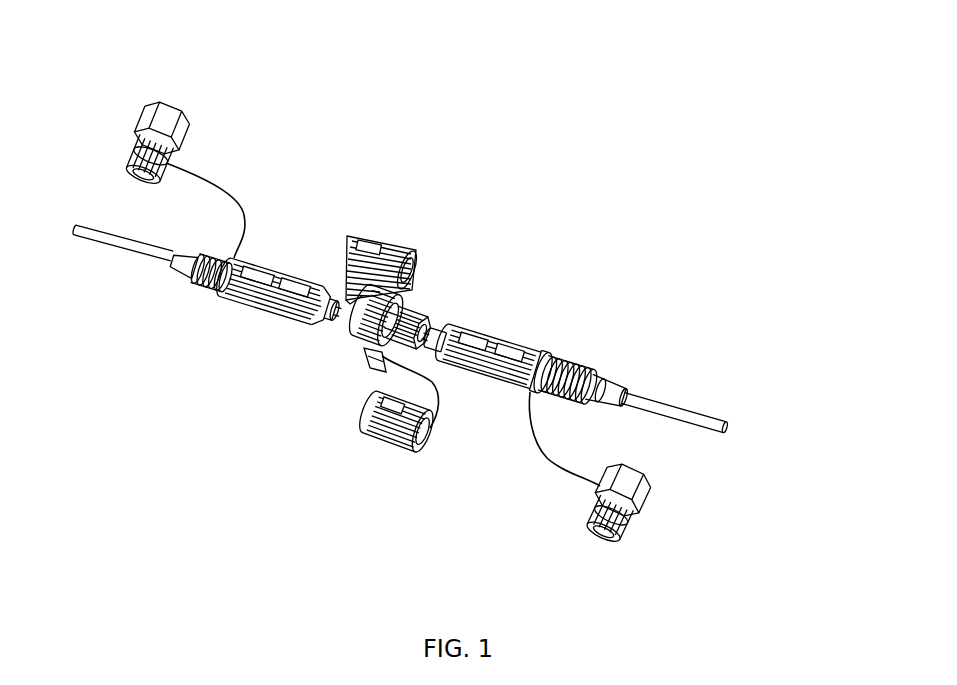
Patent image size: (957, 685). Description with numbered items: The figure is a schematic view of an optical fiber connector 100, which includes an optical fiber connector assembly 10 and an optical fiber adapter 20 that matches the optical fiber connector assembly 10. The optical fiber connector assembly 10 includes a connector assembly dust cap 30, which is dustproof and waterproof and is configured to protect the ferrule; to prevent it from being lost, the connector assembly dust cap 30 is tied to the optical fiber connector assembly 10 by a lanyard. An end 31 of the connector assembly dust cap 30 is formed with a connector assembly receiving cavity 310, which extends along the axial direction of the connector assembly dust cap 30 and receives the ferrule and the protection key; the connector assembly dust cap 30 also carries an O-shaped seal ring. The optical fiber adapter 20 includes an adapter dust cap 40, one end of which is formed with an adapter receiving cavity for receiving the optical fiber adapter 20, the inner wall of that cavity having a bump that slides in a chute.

The optical fiber connector 100 is at (456, 338).
The optical fiber connector assembly 10 is at (577, 284).
The optical fiber adapter 20 is at (460, 317).
The connector assembly dust cap 30 is at (693, 558).
The end 31 is at (618, 523).
The connector assembly receiving cavity 310 is at (603, 533).
The adapter dust cap 40 is at (413, 233).